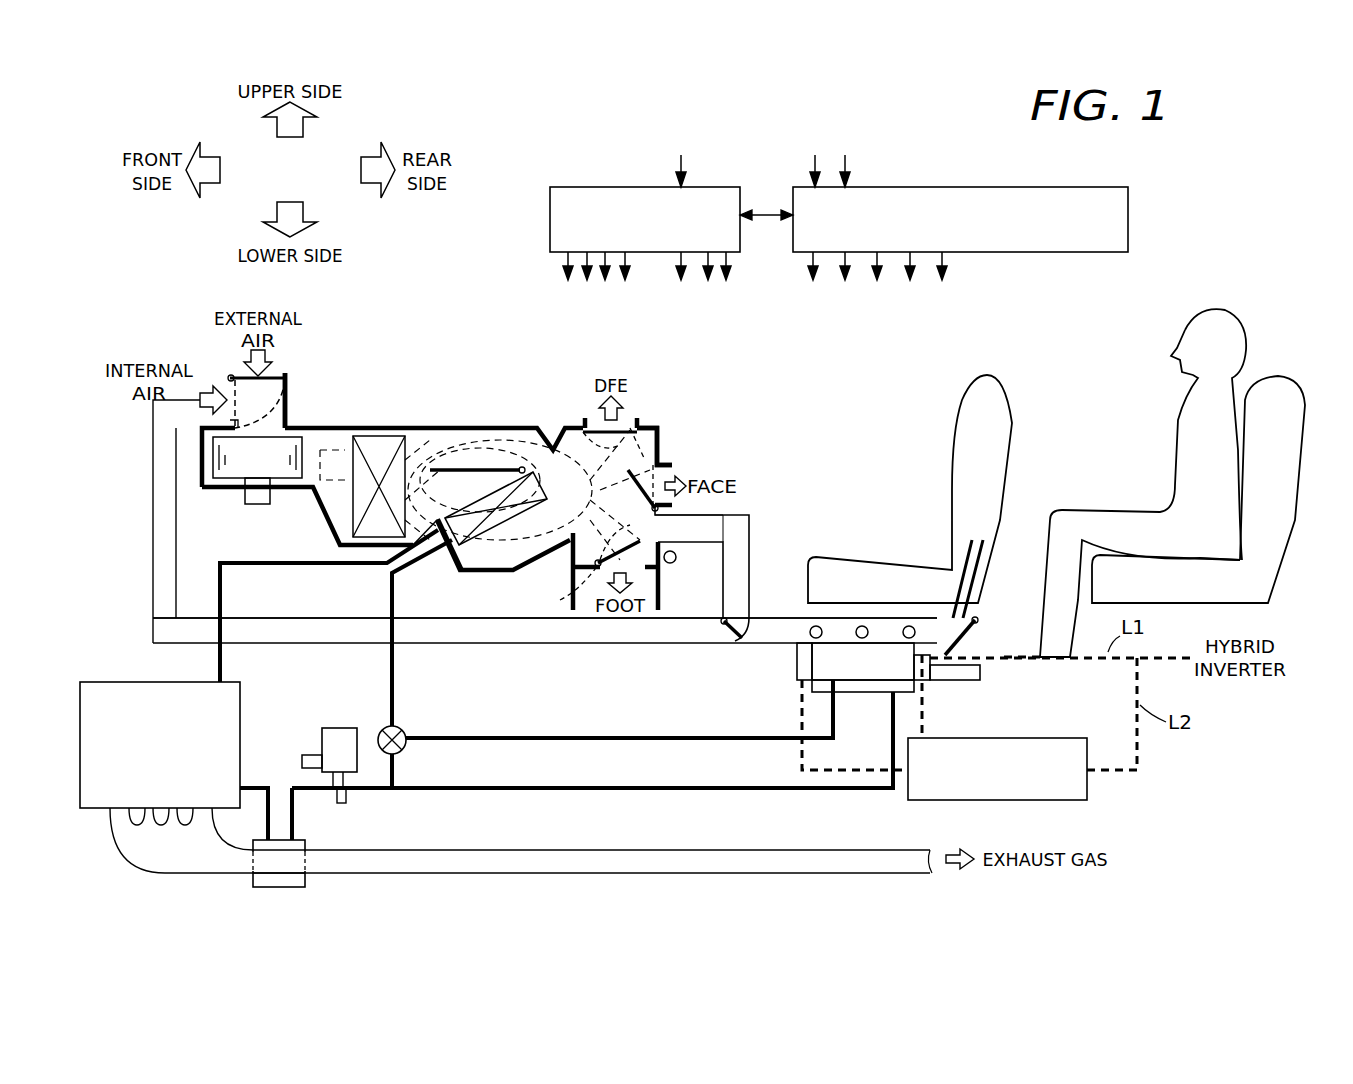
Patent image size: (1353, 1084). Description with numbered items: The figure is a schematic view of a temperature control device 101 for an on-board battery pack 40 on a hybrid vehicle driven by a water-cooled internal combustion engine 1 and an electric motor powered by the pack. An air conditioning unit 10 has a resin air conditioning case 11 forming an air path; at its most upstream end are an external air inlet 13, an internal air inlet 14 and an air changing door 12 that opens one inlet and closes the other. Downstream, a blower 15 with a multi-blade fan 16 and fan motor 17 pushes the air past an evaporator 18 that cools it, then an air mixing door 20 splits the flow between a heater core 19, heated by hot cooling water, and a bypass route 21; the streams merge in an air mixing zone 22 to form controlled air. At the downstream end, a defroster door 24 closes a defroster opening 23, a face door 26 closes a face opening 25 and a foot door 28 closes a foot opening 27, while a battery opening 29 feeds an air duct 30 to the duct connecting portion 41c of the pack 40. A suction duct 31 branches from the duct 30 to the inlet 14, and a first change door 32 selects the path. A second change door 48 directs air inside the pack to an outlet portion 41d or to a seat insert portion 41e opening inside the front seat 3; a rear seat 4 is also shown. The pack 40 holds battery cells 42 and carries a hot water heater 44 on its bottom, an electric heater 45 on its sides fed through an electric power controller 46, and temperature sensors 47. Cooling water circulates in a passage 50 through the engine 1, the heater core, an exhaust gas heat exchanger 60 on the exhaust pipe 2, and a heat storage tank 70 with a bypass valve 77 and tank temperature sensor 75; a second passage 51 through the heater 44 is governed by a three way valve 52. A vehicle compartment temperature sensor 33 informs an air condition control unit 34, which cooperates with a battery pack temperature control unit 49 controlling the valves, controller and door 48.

The internal combustion engine 1 is at (108, 680).
The exhaust pipe 2 is at (586, 876).
The front seat 3 is at (990, 375).
The rear seat 4 is at (1283, 385).
The air conditioning unit 10 is at (328, 425).
The air conditioning case 11 is at (290, 390).
The air changing door 12 is at (286, 380).
The external air inlet 13 is at (236, 376).
The internal air inlet 14 is at (224, 395).
The blower 15 is at (435, 421).
The multi-blade fan 16 is at (244, 468).
The fan motor 17 is at (257, 500).
The evaporator 18 is at (378, 440).
The heater core 19 is at (473, 548).
The air mixing door 20 is at (458, 467).
The bypass route 21 is at (500, 440).
The air mixing zone 22 is at (655, 462).
The defroster opening 23 is at (598, 428).
The defroster door 24 is at (628, 425).
The face opening 25 is at (685, 470).
The face door 26 is at (655, 470).
The foot opening 27 is at (595, 580).
The foot door 28 is at (590, 565).
The battery opening 29 is at (690, 525).
The air duct 30 is at (749, 548).
The suction duct 31 is at (632, 648).
The first change door 32 is at (728, 645).
The vehicle compartment temperature sensor 33 is at (673, 565).
The air condition control unit 34 is at (550, 205).
The battery pack 40 is at (963, 683).
The duct connecting portion 41c is at (795, 618).
The portion 41d is at (982, 652).
The seat insert portion 41e is at (975, 560).
The battery cells 42 is at (878, 655).
The hot water heater 44 is at (865, 693).
The electric heater 45 is at (797, 660).
The electric power controller 46 is at (1060, 738).
The battery pack temperature sensors 47 is at (818, 625).
The second change door 48 is at (960, 672).
The battery pack temperature control unit 49 is at (1128, 200).
The cooling water circulating passage 50 is at (223, 660).
The second circulating passage 51 is at (568, 735).
The three way valve 52 is at (405, 735).
The exhaust gas heat exchanger 60 is at (272, 888).
The heat storage tank 70 is at (343, 727).
The tank temperature sensor 75 is at (305, 755).
The bypass valve 77 is at (346, 803).
The temperature control device 101 is at (566, 168).